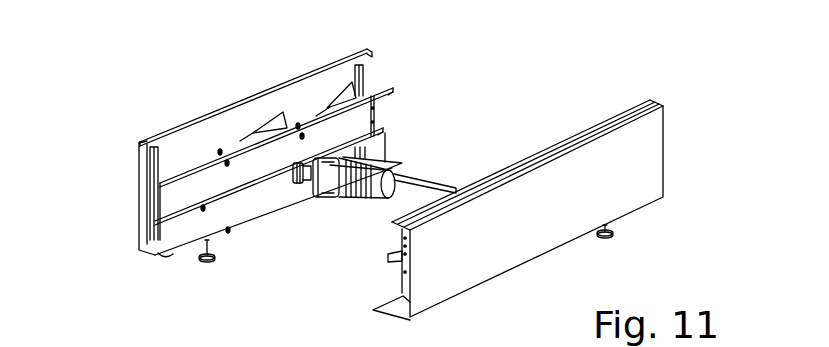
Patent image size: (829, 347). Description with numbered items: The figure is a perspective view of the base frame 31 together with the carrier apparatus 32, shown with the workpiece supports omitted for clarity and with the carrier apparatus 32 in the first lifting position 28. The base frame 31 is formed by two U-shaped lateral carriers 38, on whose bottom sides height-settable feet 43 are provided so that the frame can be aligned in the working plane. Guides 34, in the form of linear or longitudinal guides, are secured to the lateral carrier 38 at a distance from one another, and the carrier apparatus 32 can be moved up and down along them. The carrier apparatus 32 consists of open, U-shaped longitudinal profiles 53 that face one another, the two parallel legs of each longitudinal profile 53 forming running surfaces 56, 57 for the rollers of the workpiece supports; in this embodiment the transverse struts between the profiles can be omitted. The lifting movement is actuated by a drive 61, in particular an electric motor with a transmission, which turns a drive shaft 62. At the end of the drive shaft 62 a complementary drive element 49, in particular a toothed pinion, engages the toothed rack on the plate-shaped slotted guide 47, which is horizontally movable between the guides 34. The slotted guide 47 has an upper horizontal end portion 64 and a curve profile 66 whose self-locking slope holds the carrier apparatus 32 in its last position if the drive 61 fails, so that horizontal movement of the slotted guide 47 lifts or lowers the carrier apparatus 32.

The first lifting position 28 is at (124, 224).
The base frame 31 is at (684, 173).
The carrier apparatus 32 is at (412, 70).
The guides 34 is at (150, 158).
The lateral carrier 38 is at (655, 142).
The feet 43 is at (205, 262).
The slotted guide 47 is at (243, 122).
The complementary drive element 49 is at (298, 187).
The longitudinal profile 53 is at (362, 117).
The running surface 56 is at (366, 135).
The running surface 57 is at (380, 88).
The drive 61 is at (348, 208).
The drive shaft 62 is at (433, 183).
The upper horizontal end portion 64 is at (278, 123).
The curve profile 66 is at (262, 127).